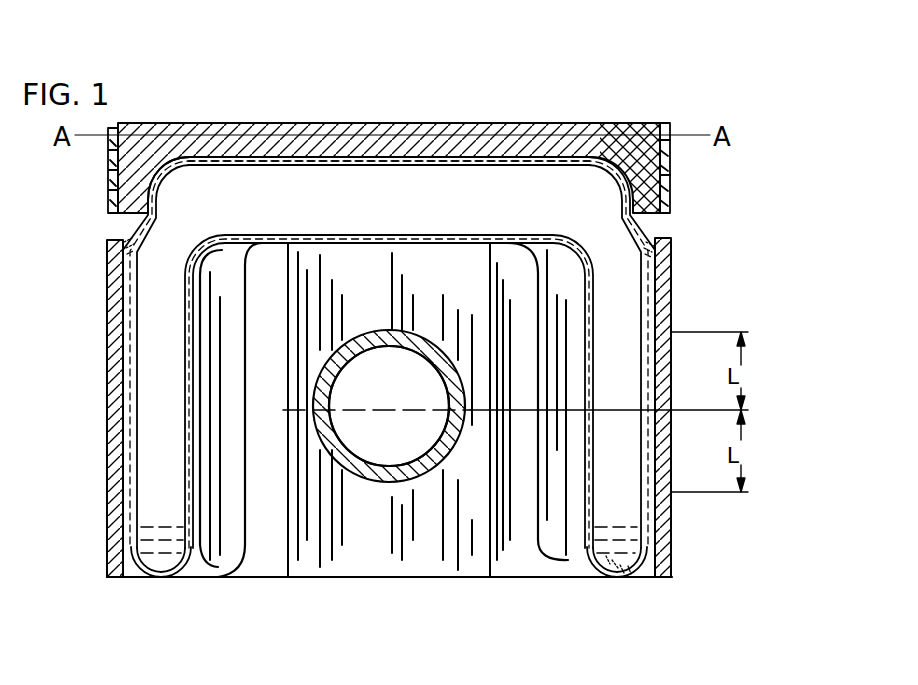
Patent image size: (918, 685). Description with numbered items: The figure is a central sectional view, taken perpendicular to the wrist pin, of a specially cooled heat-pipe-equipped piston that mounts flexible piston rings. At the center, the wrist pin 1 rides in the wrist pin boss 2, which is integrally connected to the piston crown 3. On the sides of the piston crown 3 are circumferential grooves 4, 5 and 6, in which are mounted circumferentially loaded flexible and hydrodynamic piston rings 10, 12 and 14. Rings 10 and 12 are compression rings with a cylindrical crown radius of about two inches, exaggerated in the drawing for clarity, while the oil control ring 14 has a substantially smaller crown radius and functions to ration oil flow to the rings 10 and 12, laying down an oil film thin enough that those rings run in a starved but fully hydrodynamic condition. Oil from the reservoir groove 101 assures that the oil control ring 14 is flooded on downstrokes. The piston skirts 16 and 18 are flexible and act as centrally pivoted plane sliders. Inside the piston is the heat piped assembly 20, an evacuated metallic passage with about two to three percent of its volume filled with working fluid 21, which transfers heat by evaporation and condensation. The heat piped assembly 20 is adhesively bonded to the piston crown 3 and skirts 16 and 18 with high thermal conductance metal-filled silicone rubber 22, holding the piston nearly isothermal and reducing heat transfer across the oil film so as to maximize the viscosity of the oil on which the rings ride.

The wrist pin 1 is at (383, 482).
The wrist pin boss 2 is at (452, 460).
The piston crown 3 is at (398, 122).
The circumferential groove 4 is at (639, 122).
The circumferential groove 5 is at (631, 122).
The circumferential groove 6 is at (605, 122).
The piston ring 10 is at (672, 130).
The piston ring 12 is at (672, 160).
The oil control ring 14 is at (672, 190).
The piston skirt 16 is at (107, 390).
The piston skirt 18 is at (672, 555).
The heat piped assembly 20 is at (576, 577).
The working fluid 21 is at (627, 548).
The metal-filled silicone rubber 22 is at (197, 158).
The reservoir groove 101 is at (128, 240).